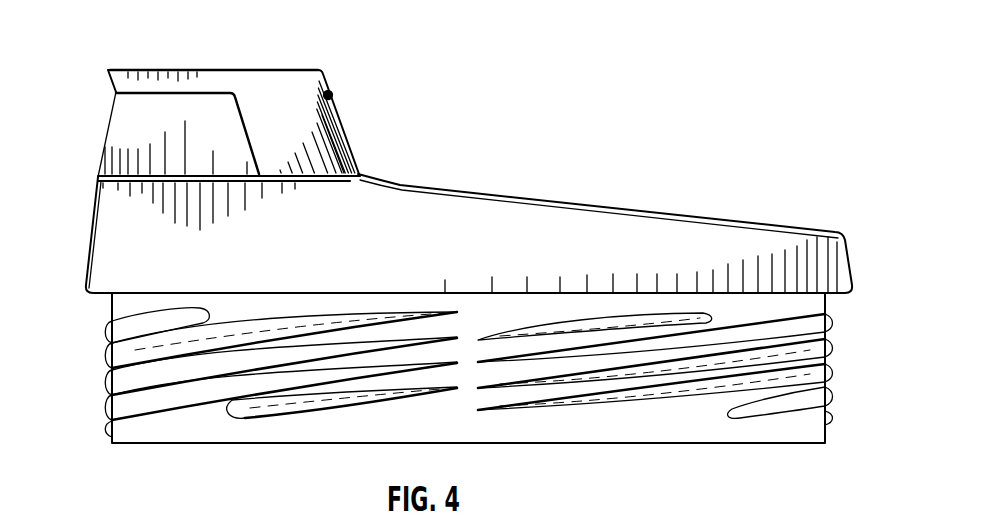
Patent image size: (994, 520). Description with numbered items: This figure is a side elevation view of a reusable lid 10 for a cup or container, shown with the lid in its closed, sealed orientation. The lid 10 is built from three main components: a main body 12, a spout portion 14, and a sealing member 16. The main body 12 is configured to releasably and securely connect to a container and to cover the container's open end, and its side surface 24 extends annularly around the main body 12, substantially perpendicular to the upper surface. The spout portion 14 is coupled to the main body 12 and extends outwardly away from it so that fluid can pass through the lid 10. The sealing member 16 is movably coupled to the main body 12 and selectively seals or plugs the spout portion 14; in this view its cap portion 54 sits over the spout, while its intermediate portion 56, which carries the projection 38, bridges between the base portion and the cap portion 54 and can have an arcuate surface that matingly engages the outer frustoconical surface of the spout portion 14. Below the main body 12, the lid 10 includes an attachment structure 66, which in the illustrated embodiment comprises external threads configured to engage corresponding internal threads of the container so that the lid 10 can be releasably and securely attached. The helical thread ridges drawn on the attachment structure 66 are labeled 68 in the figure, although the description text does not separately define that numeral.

The reusable lid 10 is at (608, 70).
The main body 12 is at (575, 218).
The spout portion 14 is at (137, 127).
The sealing member 16 is at (297, 88).
The side surface 24 is at (145, 258).
The projection 38 is at (334, 95).
The cap portion 54 is at (198, 78).
The intermediate portion 56 is at (310, 118).
The attachment structure 66 is at (110, 428).
The helical thread 68 is at (210, 320).